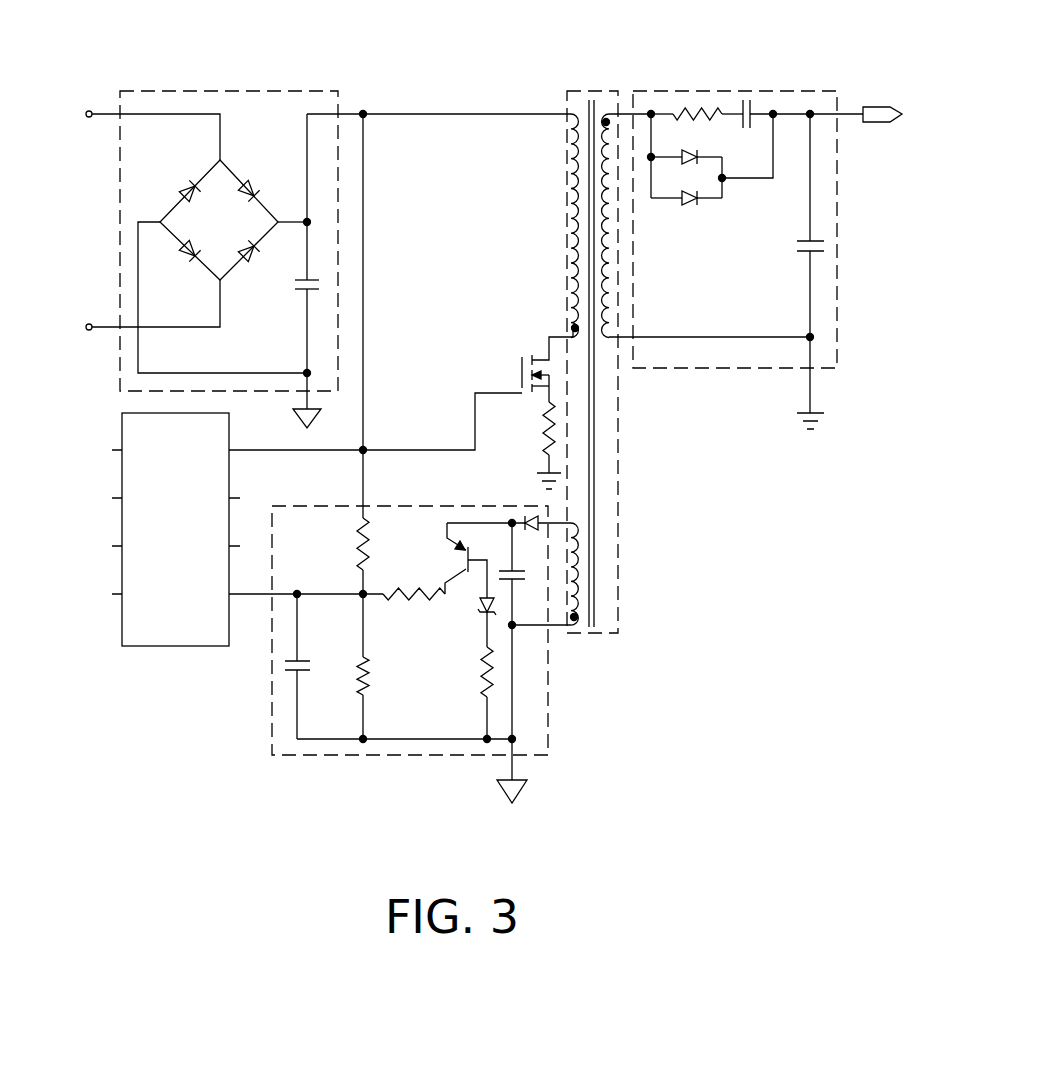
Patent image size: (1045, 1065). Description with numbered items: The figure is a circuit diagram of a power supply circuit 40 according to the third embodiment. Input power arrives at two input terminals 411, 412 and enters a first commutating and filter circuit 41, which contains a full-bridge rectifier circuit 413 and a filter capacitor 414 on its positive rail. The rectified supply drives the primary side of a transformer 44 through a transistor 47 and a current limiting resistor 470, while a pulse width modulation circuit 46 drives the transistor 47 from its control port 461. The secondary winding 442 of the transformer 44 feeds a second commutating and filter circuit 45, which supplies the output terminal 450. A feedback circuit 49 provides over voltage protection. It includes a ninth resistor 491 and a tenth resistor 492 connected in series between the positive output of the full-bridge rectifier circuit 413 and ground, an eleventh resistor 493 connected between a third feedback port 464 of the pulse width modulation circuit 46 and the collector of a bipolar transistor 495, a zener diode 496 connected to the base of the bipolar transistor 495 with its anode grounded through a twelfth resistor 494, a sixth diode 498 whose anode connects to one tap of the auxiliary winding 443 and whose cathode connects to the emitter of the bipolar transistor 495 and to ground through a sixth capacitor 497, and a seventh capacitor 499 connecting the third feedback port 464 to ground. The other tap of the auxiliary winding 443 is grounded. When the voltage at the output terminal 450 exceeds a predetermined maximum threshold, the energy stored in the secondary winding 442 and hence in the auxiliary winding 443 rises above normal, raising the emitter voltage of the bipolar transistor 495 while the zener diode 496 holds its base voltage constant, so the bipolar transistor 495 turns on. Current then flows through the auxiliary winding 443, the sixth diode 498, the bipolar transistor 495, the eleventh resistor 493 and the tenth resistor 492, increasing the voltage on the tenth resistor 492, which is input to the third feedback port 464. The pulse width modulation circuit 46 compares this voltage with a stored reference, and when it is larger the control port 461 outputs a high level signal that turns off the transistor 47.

The power supply circuit 40 is at (482, 425).
The first commutating and filter circuit 41 is at (300, 90).
The input terminal 411 is at (87, 110).
The input terminal 412 is at (88, 323).
The full-bridge rectifier circuit 413 is at (223, 193).
The filter capacitor 414 is at (294, 283).
The transformer 44 is at (661, 343).
The secondary winding 442 is at (610, 297).
The auxiliary winding 443 is at (560, 627).
The second commutating and filter circuit 45 is at (705, 90).
The output terminal 450 is at (878, 110).
The pulse width modulation circuit 46 is at (170, 648).
The control port 461 is at (232, 452).
The third feedback port 464 is at (232, 598).
The transistor 47 is at (527, 352).
The current limiting resistor 470 is at (545, 425).
The feedback circuit 49 is at (548, 700).
The ninth resistor 491 is at (355, 555).
The tenth resistor 492 is at (360, 697).
The eleventh resistor 493 is at (407, 613).
The twelfth resistor 494 is at (473, 672).
The bipolar transistor 495 is at (450, 560).
The zener diode 496 is at (473, 600).
The sixth capacitor 497 is at (520, 588).
The sixth diode 498 is at (530, 514).
The seventh capacitor 499 is at (305, 673).